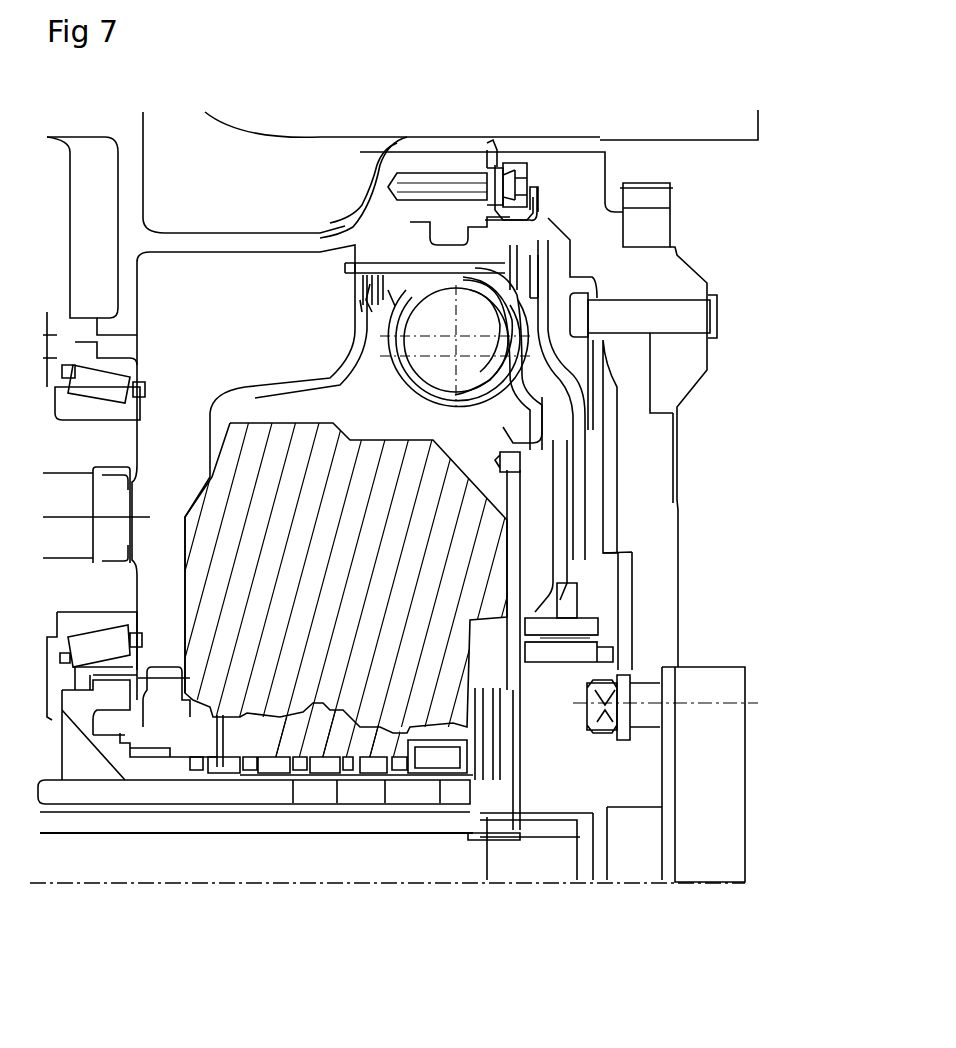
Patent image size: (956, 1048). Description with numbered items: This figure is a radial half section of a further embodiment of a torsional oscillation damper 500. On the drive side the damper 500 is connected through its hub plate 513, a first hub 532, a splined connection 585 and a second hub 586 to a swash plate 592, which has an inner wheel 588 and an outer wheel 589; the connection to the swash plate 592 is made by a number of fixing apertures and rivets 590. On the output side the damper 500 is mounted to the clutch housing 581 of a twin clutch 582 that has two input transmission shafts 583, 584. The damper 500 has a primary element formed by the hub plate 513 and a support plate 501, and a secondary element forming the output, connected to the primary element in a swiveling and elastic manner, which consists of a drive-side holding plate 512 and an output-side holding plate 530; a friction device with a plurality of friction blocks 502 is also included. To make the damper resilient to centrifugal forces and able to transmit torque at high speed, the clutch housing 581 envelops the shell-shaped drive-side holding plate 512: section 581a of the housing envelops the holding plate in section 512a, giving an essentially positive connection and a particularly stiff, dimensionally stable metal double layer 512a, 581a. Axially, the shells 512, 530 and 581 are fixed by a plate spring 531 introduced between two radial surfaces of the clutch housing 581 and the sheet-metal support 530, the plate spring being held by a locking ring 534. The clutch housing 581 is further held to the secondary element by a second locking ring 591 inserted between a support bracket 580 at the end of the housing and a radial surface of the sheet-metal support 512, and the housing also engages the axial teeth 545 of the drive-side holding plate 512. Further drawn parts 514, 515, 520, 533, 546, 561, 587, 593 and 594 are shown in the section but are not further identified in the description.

The torsional oscillation damper 500 is at (597, 123).
The support plate 501 is at (537, 397).
The friction blocks 502 is at (550, 407).
The drive-side holding plate 512 is at (520, 267).
The section of the drive-side holding plate 512a is at (465, 245).
The hub plate 513 is at (535, 417).
The ring 514 is at (510, 462).
The sleeve wall 515 is at (517, 430).
The bracket 520 is at (760, 112).
The output-side holding plate 530 is at (413, 267).
The plate spring 531 is at (377, 270).
The first hub 532 is at (578, 622).
The clip 533 is at (500, 255).
The locking ring 534 is at (393, 270).
The axial teeth 545 is at (352, 270).
The cover lip 546 is at (437, 258).
The wall 561 is at (592, 345).
The support bracket 580 is at (503, 287).
The clutch housing 581 is at (294, 385).
The section of the clutch housing 581a is at (520, 215).
The twin clutch 582 is at (335, 581).
The input transmission shaft 583 is at (228, 826).
The input transmission shaft 584 is at (365, 856).
The splined connection 585 is at (588, 632).
The second hub 586 is at (600, 653).
The block 587 is at (708, 808).
The inner wheel 588 is at (615, 618).
The outer wheel 589 is at (608, 300).
The rivets 590 is at (535, 368).
The second locking ring 591 is at (532, 257).
The swash plate 592 is at (610, 573).
The boss 593 is at (655, 350).
The nut 594 is at (646, 704).